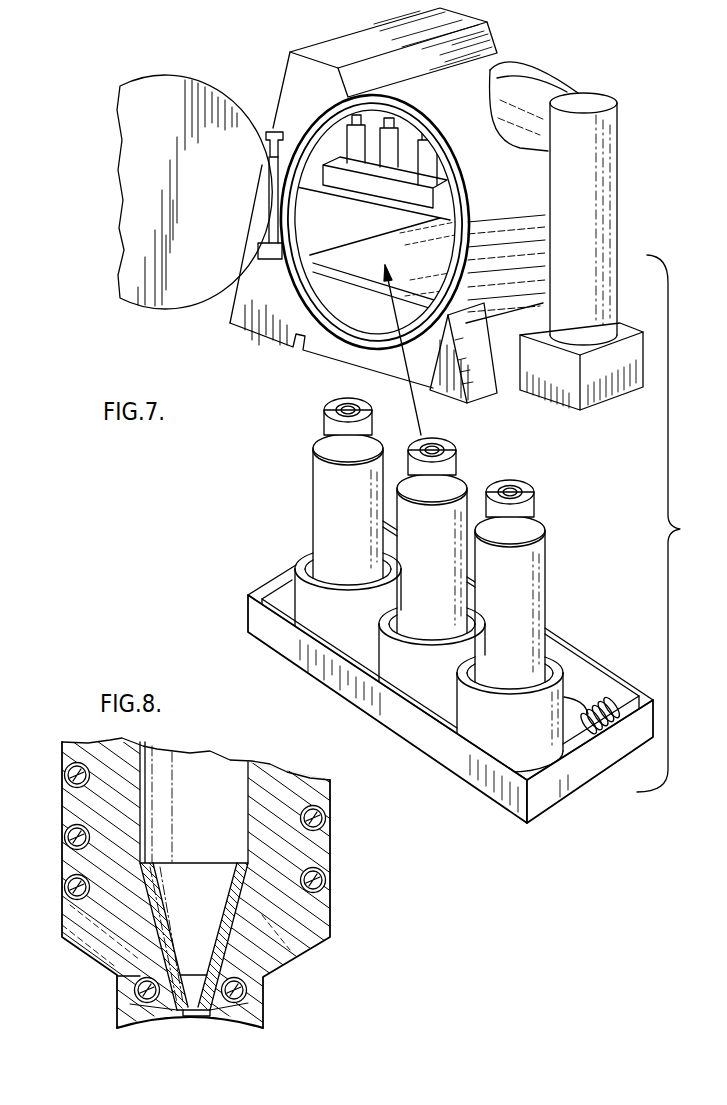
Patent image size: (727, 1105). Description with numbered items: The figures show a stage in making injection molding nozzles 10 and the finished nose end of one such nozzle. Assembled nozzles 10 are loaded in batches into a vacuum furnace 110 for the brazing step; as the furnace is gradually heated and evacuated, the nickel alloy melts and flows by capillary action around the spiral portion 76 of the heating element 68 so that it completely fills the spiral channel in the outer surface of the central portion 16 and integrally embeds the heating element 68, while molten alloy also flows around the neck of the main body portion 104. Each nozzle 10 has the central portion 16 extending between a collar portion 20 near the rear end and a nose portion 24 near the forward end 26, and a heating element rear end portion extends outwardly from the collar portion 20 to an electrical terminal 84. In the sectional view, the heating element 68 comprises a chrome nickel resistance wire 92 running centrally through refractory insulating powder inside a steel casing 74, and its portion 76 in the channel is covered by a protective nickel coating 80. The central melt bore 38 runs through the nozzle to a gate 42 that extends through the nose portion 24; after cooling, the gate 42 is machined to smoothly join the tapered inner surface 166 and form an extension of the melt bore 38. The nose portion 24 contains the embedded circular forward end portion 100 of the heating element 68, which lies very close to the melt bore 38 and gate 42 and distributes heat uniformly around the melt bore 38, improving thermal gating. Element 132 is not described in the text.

In FIG. 7, the nozzle 10 is at (363, 585).
In FIG. 7, the central portion 16 is at (546, 579).
In FIG. 7, the collar portion 20 is at (564, 690).
In FIG. 7, the nose portion 24 is at (538, 505).
In FIG. 8, the nose portion 24 is at (265, 1020).
In FIG. 8, the forward end 26 is at (145, 1028).
In FIG. 8, the central melt bore 38 is at (215, 785).
In FIG. 8, the gate 42 is at (196, 1018).
In FIG. 8, the heating element 68 is at (66, 842).
In FIG. 8, the steel casing 74 is at (265, 978).
In FIG. 8, the portion of the heating element 76 is at (326, 819).
In FIG. 8, the protective nickel coating 80 is at (331, 845).
In FIG. 7, the electrical terminal 84 is at (602, 697).
In FIG. 8, the resistance wire 92 is at (134, 987).
In FIG. 8, the circular forward end portion 100 is at (262, 1010).
In FIG. 8, the main body portion 104 is at (303, 778).
In FIG. 7, the vacuum furnace 110 is at (511, 62).
In FIG. 7, the opening 132 is at (512, 488).
In FIG. 8, the tapered inner surface 166 is at (226, 940).